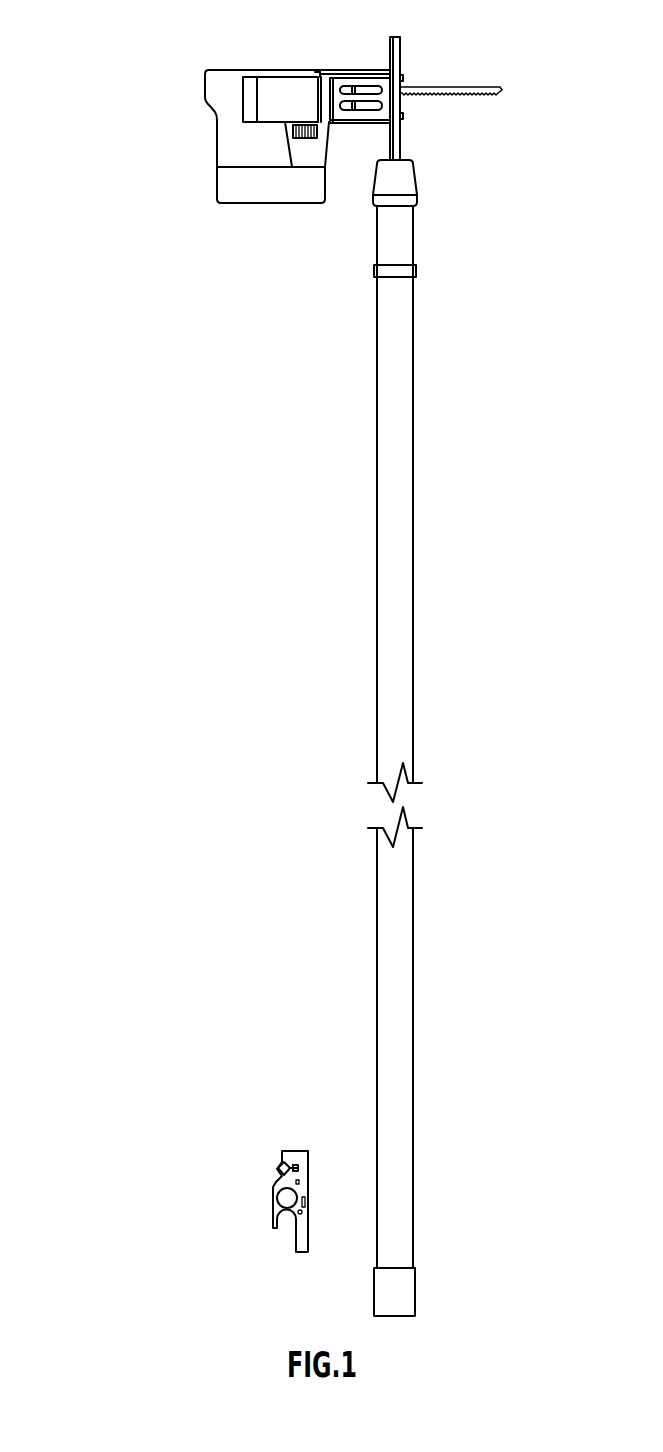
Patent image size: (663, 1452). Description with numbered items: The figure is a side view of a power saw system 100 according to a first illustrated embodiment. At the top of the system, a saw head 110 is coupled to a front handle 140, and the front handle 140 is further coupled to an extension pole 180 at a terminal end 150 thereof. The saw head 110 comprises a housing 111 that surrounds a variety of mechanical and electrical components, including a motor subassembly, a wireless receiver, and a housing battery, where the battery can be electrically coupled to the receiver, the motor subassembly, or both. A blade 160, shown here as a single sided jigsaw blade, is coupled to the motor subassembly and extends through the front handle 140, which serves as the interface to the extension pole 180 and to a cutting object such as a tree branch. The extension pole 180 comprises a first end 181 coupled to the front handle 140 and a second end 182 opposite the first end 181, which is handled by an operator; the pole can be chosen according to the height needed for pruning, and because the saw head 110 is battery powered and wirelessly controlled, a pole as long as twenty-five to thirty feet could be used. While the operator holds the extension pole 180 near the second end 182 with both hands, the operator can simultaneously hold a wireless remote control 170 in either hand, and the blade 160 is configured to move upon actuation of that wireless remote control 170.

The power saw system 100 is at (147, 62).
The saw head 110 is at (227, 73).
The housing 111 is at (245, 128).
The front handle 140 is at (400, 135).
The terminal end 150 is at (414, 271).
The blade 160 is at (453, 88).
The wireless remote control 170 is at (275, 1195).
The extension pole 180 is at (402, 677).
The first end 181 is at (377, 363).
The second end 182 is at (413, 1255).